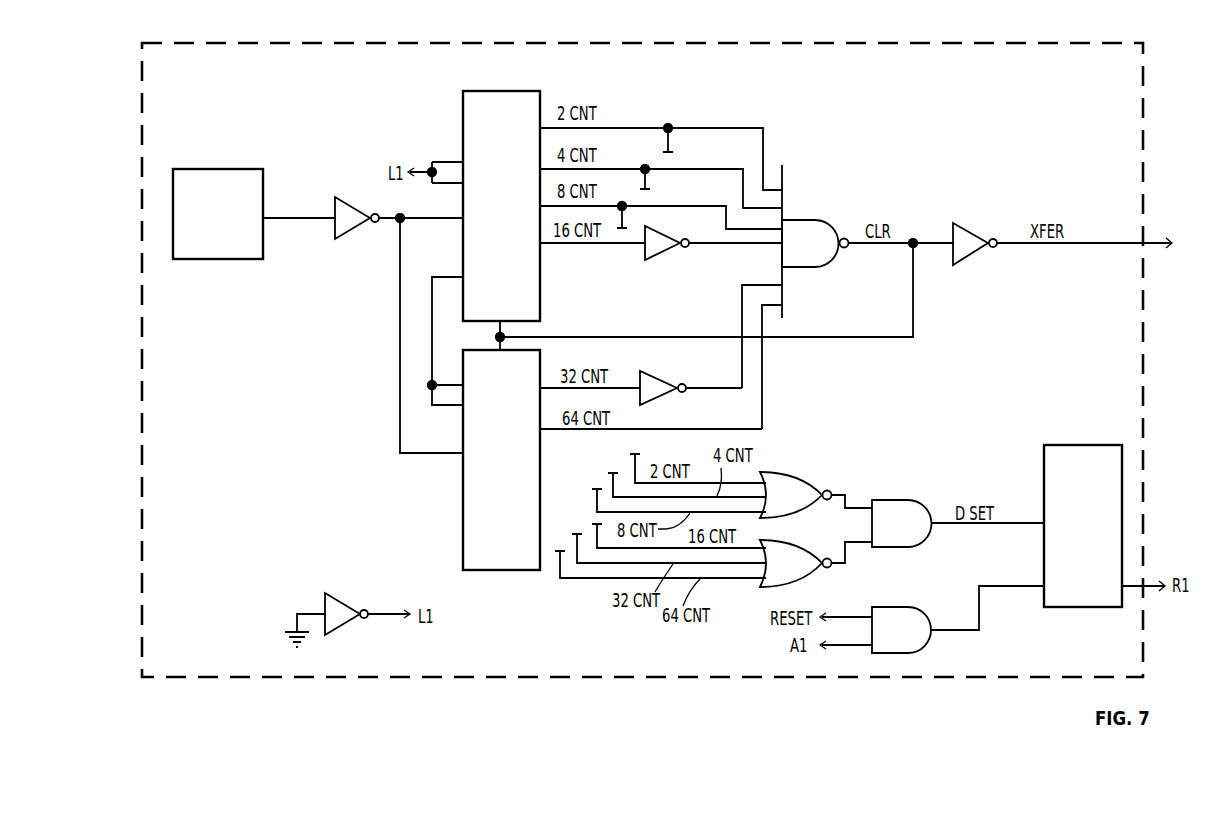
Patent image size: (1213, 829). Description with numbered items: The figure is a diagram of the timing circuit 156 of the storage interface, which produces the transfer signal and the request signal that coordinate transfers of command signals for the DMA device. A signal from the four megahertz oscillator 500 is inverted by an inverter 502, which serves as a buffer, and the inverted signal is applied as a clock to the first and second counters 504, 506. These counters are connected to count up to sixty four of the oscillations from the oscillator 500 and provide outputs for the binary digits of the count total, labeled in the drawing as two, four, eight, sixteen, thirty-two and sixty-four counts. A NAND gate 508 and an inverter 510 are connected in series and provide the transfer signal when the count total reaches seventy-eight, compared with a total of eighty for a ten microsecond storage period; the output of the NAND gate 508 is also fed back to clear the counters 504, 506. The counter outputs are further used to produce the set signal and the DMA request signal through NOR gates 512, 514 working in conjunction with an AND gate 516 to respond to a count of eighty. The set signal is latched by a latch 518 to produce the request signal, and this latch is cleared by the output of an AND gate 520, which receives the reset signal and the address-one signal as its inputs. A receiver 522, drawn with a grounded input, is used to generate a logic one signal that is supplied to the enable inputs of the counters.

The timing circuit 156 is at (771, 42).
The four megahertz oscillator 500 is at (203, 260).
The inverter 502 is at (356, 228).
The first counter 504 is at (545, 289).
The second counter 506 is at (460, 485).
The NAND gate 508 is at (820, 220).
The inverter 510 is at (975, 238).
The NOR gate 512 is at (798, 472).
The NOR gate 514 is at (803, 581).
The AND gate 516 is at (905, 500).
The latch 518 is at (1082, 445).
The AND gate 520 is at (925, 651).
The receiver 522 is at (341, 627).